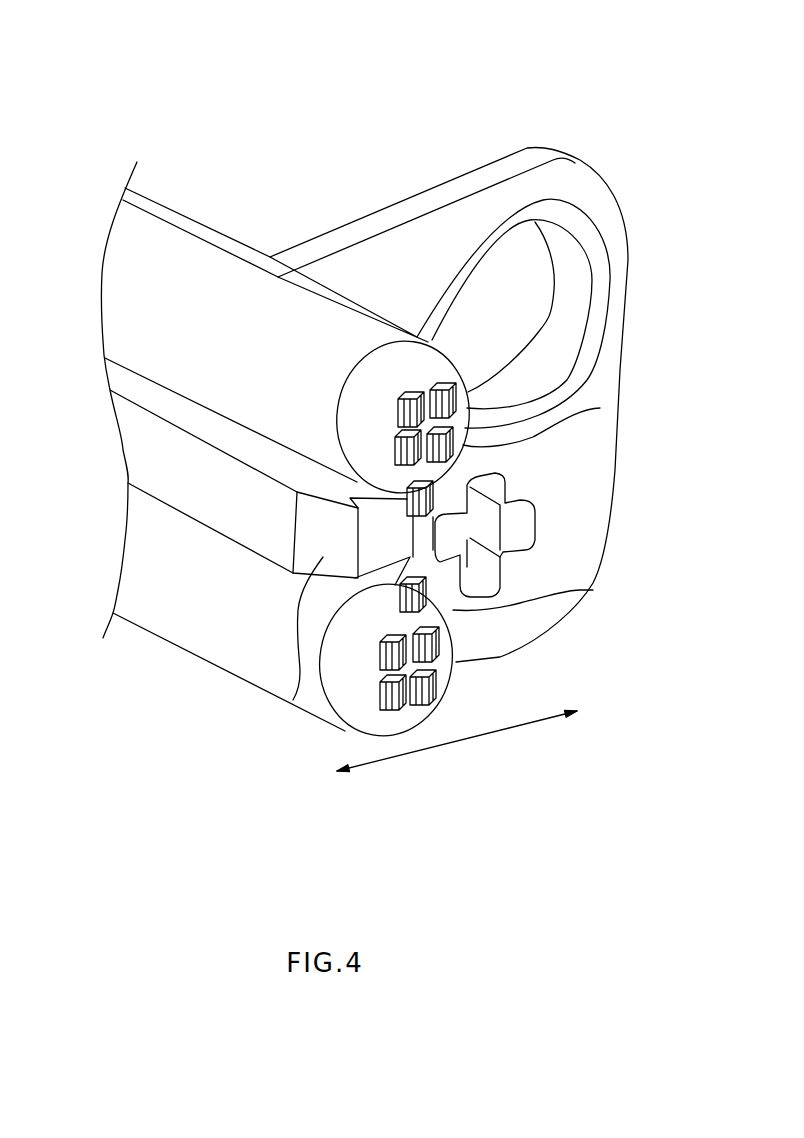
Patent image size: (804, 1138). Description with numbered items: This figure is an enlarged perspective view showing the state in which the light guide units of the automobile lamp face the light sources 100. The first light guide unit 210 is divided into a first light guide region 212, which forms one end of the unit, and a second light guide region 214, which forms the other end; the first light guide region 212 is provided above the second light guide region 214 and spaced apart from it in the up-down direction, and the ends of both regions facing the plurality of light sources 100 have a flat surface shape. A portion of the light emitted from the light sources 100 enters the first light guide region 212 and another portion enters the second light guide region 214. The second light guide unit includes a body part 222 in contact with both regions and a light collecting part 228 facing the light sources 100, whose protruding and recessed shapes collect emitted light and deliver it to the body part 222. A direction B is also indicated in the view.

The first light guide unit 210 is at (88, 42).
The first light guide region 212 is at (193, 260).
The second light guide region 214 is at (200, 688).
The body part 222 is at (140, 450).
The light collecting part 228 is at (295, 693).
The light source 100 is at (600, 408).
The direction B is at (457, 742).